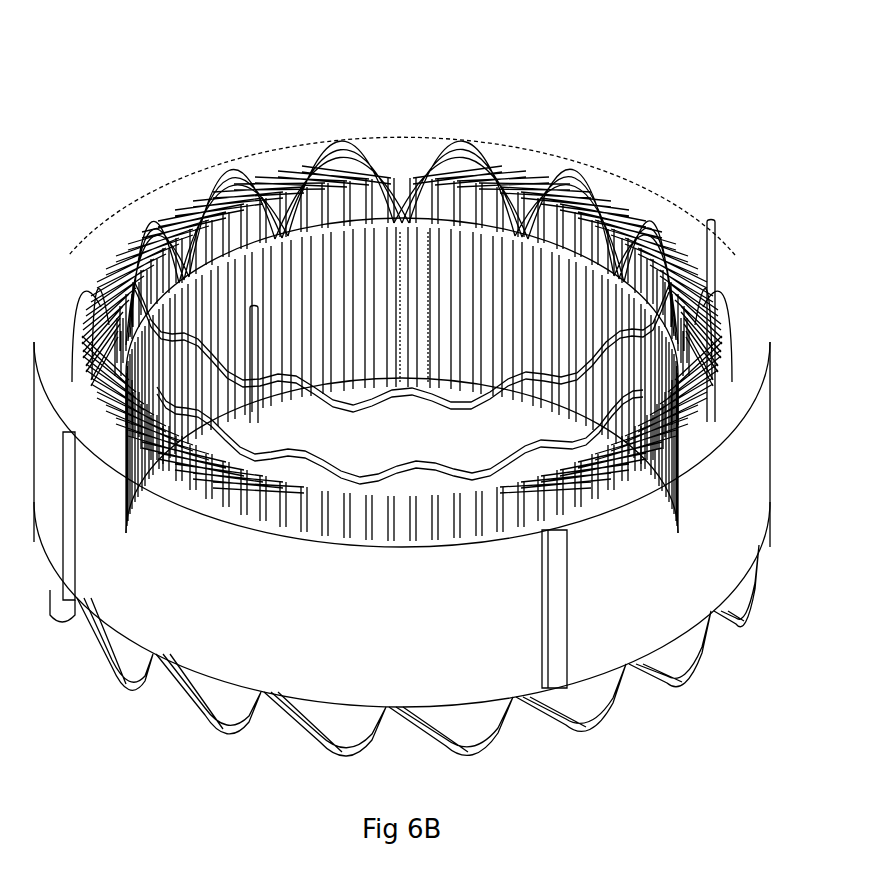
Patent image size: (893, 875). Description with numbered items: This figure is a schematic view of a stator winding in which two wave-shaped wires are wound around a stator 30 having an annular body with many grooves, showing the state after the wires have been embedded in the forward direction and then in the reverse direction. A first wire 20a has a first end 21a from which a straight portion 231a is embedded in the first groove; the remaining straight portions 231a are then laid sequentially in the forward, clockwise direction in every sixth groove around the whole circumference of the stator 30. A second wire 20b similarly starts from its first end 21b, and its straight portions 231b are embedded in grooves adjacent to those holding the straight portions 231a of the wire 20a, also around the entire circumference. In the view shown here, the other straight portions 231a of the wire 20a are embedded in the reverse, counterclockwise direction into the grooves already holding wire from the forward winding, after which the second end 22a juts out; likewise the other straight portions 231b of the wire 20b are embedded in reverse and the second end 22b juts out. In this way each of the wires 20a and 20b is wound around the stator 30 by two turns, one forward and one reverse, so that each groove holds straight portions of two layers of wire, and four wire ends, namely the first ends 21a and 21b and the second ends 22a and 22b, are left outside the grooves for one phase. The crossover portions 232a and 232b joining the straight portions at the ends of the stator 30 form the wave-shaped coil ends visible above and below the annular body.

The wire 20a is at (640, 278).
The wire 20b is at (148, 282).
The first end 21a is at (643, 357).
The first end 21b is at (85, 390).
The second end 22a is at (714, 240).
The second end 22b is at (253, 380).
The straight portion 231a is at (400, 245).
The straight portion 231b is at (428, 245).
The first crossover portion 232a is at (318, 148).
The second crossover portion 232b is at (345, 150).
The stator 30 is at (627, 643).